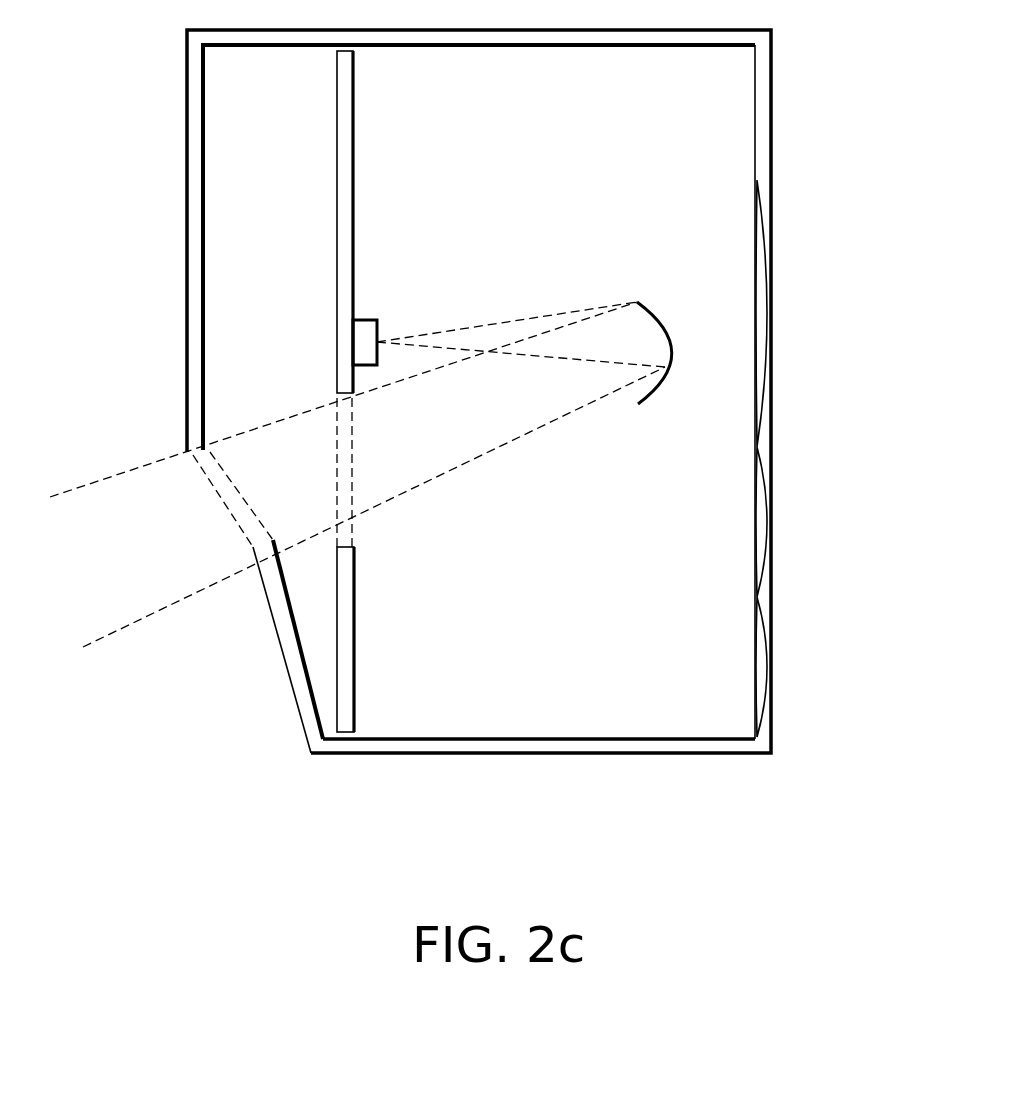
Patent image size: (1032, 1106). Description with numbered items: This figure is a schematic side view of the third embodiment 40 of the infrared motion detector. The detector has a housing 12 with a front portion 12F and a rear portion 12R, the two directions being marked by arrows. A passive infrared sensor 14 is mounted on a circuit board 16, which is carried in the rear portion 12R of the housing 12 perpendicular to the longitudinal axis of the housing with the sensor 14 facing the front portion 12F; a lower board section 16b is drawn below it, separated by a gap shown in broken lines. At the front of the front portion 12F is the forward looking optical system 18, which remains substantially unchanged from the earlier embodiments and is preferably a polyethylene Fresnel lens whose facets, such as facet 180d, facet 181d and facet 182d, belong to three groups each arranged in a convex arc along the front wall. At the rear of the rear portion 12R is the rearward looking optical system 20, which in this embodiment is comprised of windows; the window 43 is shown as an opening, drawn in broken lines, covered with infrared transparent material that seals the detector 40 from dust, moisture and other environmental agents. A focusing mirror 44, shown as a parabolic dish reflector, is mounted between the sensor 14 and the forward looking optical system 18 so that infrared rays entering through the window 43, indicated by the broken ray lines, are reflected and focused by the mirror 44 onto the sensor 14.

The housing 12 is at (605, 750).
The rear portion 12R is at (379, 113).
The front portion 12F is at (552, 153).
The passive infrared sensor 14 is at (363, 325).
The circuit board 16 is at (353, 185).
The lower baffle panel 16b is at (347, 523).
The forward looking optical system 18 is at (831, 458).
The facet or segment 180d is at (768, 360).
The facet or segment 181d is at (767, 552).
The facet or segment 182d is at (766, 697).
The rearward looking optical system 20 is at (207, 538).
The third embodiment of the detector 40 is at (396, 788).
The window 43 is at (233, 498).
The focusing mirror 44 is at (660, 318).